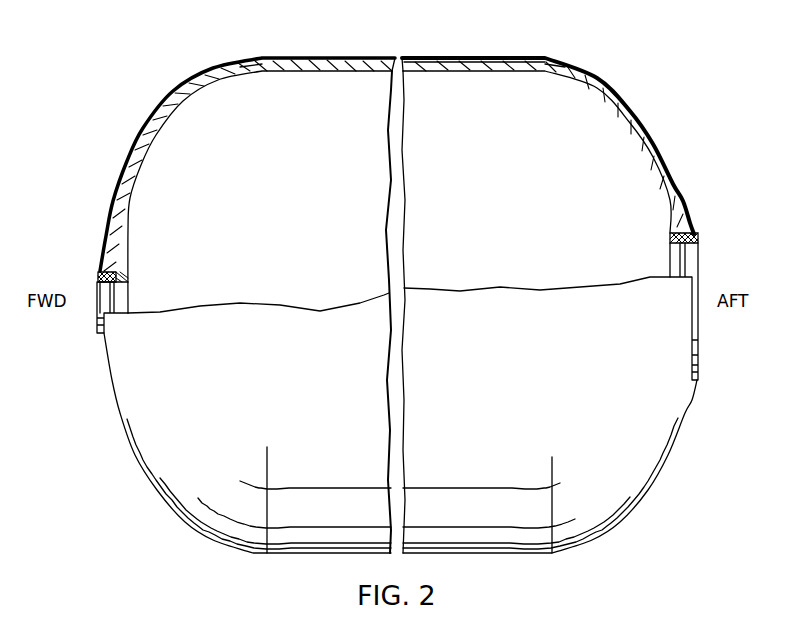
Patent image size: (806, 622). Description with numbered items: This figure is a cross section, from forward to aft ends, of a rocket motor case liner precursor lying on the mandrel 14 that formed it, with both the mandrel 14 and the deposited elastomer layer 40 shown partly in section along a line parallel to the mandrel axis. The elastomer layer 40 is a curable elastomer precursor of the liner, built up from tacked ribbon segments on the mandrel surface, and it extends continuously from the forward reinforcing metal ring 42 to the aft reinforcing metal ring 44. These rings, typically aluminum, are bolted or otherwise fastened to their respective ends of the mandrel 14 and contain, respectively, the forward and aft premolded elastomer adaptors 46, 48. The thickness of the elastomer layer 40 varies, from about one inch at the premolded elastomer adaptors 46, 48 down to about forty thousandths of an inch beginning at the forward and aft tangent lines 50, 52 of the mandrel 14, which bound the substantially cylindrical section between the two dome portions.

The mandrel 14 is at (340, 67).
The elastomer layer 40 is at (438, 62).
The forward reinforcing metal ring 42 is at (104, 276).
The aft reinforcing metal ring 44 is at (692, 238).
The forward premolded elastomer adaptor 46 is at (118, 270).
The aft premolded elastomer adaptor 48 is at (677, 238).
The forward tangent line 50 is at (268, 57).
The aft tangent line 52 is at (550, 57).